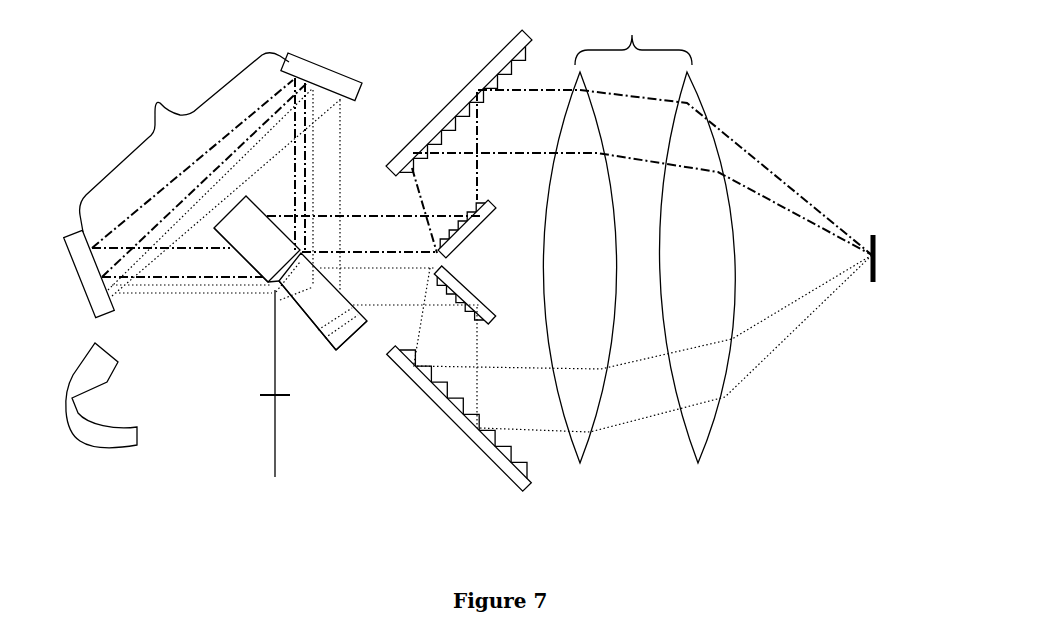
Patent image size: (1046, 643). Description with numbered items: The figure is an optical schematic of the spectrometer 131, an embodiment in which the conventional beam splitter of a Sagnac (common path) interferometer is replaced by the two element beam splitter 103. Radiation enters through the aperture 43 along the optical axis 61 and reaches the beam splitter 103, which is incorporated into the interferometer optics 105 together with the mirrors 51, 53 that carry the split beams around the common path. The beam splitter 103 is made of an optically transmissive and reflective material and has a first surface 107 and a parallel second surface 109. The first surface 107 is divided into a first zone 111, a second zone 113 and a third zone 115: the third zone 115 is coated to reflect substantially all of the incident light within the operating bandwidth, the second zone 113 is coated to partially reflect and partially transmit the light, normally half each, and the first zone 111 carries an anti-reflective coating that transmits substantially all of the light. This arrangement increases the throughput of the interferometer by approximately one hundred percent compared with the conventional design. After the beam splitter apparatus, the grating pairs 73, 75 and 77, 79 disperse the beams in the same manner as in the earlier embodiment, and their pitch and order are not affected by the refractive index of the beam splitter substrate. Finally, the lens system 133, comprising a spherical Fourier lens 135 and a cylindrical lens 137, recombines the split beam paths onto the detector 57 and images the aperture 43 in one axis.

The aperture 43 is at (272, 388).
The mirror 51 is at (82, 278).
The mirror 53 is at (327, 77).
The detector 57 is at (870, 234).
The optical axis 61 is at (270, 443).
The grating 73 is at (472, 228).
The grating 75 is at (456, 101).
The grating 77 is at (458, 282).
The grating 79 is at (492, 453).
The beam splitter 103 is at (345, 329).
The interferometer optics 105 is at (184, 142).
The first surface 107 is at (327, 348).
The second surface 109 is at (259, 207).
The first zone 111 is at (233, 254).
The second zone 113 is at (270, 289).
The third zone 115 is at (293, 312).
The spectrometer 131 is at (125, 395).
The lens system 133 is at (633, 33).
The spherical (Fourier) lens 135 is at (579, 267).
The cylindrical lens 137 is at (698, 267).